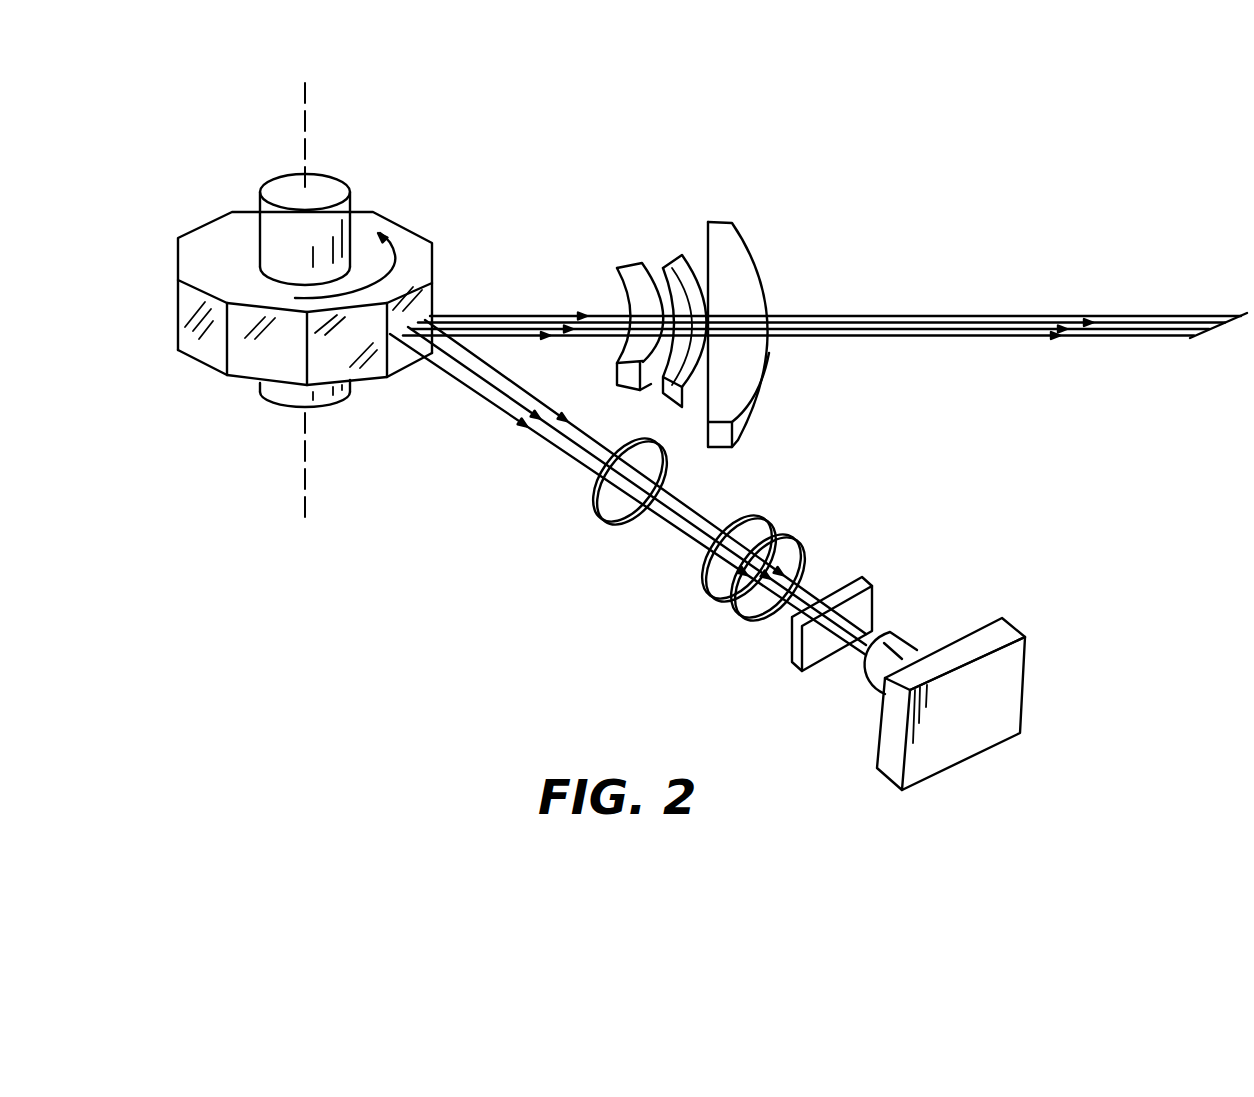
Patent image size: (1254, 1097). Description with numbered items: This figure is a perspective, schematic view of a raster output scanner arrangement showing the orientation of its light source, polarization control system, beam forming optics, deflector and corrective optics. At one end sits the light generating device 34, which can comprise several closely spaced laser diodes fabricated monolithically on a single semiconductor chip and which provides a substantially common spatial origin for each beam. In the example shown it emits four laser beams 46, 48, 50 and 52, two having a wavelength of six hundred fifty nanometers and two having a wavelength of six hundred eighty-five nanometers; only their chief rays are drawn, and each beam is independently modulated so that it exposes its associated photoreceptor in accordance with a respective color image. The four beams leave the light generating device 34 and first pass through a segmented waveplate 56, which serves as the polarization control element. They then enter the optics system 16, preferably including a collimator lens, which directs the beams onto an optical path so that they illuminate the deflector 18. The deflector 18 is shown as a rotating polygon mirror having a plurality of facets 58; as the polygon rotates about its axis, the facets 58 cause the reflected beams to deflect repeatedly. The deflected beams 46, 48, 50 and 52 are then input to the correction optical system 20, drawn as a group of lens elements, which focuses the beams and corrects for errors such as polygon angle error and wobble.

The deflector 18 is at (393, 190).
The facets 58 is at (203, 341).
The correction optical system 20 is at (660, 247).
The laser beam 52 is at (908, 316).
The laser beam 50 is at (962, 321).
The laser beam 48 is at (935, 334).
The laser beam 46 is at (882, 338).
The optics system 16 is at (727, 608).
The segmented waveplate 56 is at (868, 577).
The light generating device 34 is at (1017, 623).